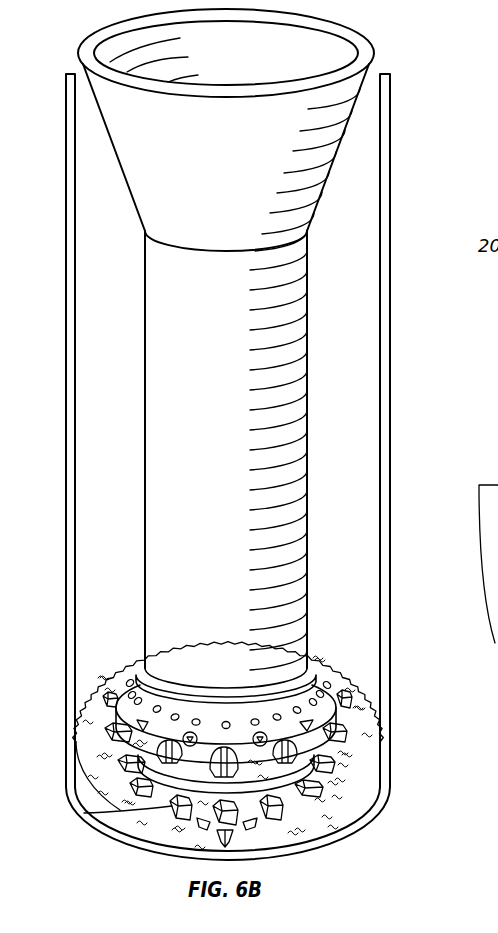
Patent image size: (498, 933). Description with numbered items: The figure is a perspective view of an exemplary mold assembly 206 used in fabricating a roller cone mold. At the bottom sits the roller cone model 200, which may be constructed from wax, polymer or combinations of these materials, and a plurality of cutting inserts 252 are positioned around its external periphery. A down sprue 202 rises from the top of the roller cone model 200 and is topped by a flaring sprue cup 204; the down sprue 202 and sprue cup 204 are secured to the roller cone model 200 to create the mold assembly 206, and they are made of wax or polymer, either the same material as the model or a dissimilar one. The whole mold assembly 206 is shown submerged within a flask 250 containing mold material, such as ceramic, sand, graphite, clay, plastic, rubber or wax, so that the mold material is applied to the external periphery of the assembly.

The roller cone model 200 is at (113, 716).
The down sprue 202 is at (145, 420).
The sprue cup 204 is at (342, 145).
The mold assembly 206 is at (392, 837).
The flask 250 is at (112, 838).
The cutting inserts 252 is at (138, 784).